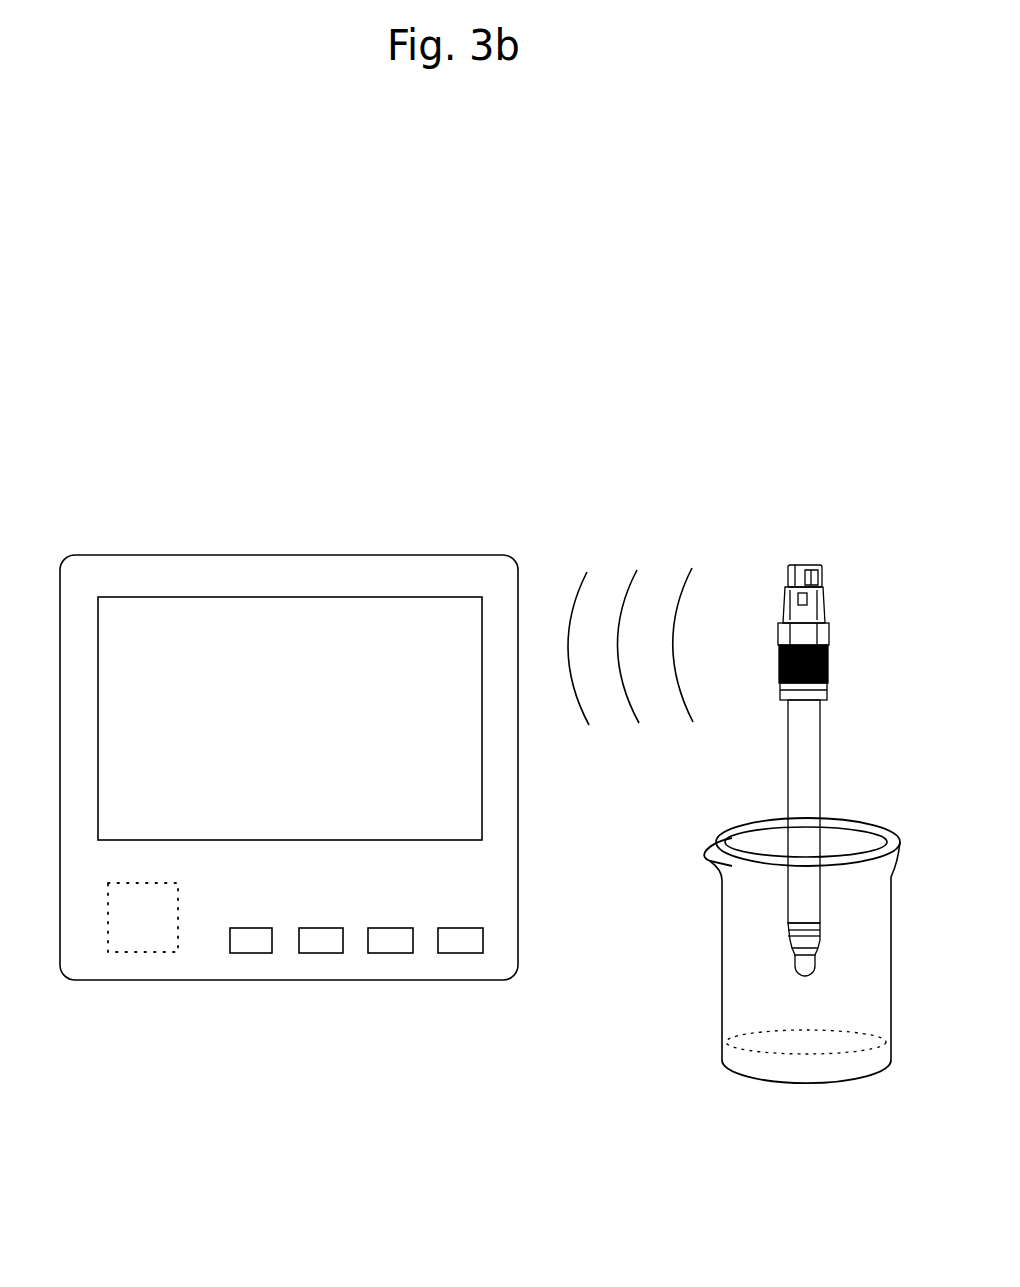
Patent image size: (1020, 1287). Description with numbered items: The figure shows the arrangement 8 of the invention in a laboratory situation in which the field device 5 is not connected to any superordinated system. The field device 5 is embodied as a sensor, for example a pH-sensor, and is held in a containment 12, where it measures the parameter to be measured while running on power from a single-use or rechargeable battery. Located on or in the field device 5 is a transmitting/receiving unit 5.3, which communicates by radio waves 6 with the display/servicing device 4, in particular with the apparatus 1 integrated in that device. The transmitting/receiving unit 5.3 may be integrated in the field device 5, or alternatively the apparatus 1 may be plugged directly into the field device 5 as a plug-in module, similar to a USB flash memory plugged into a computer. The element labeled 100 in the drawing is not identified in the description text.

The arrangement 8 is at (418, 282).
The measuring device / transmitter 100 is at (183, 518).
The apparatus 1 is at (142, 940).
The display/servicing device 4 is at (502, 975).
The radio waves 6 is at (633, 521).
The field device 5 is at (803, 513).
The transmitting/receiving unit 5.3 is at (785, 596).
The containment 12 is at (771, 1042).